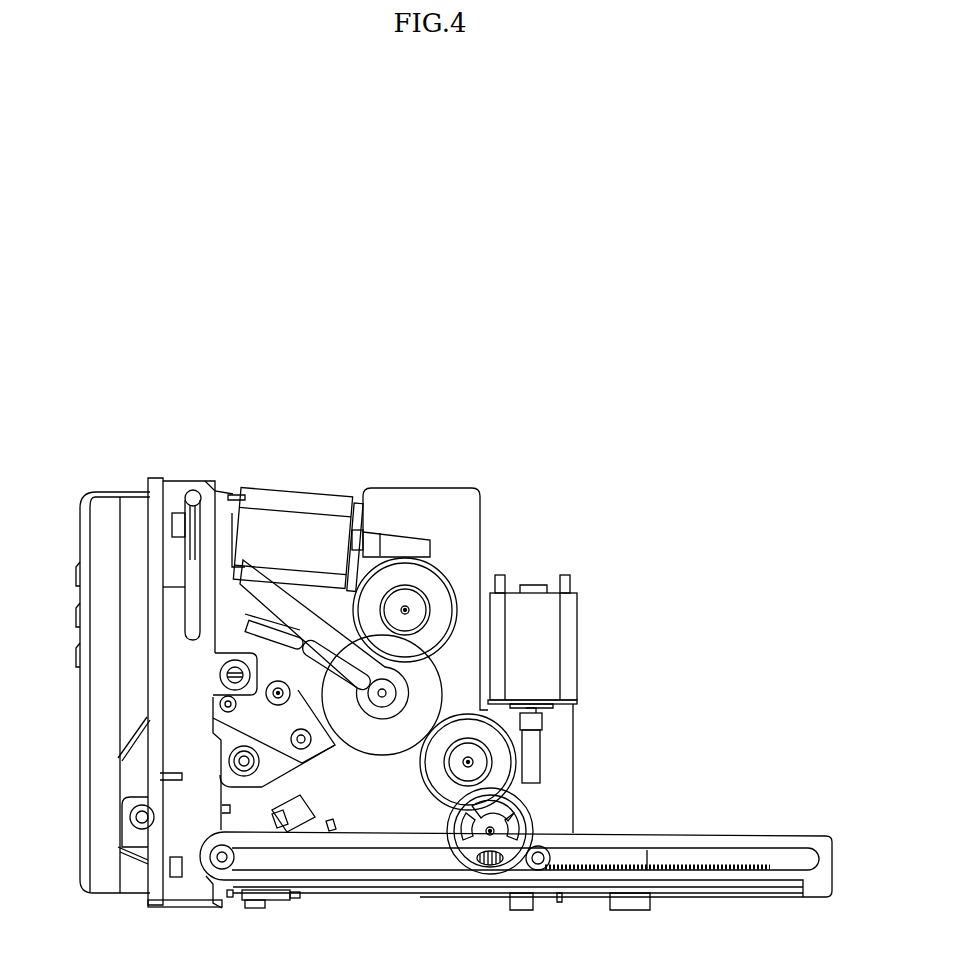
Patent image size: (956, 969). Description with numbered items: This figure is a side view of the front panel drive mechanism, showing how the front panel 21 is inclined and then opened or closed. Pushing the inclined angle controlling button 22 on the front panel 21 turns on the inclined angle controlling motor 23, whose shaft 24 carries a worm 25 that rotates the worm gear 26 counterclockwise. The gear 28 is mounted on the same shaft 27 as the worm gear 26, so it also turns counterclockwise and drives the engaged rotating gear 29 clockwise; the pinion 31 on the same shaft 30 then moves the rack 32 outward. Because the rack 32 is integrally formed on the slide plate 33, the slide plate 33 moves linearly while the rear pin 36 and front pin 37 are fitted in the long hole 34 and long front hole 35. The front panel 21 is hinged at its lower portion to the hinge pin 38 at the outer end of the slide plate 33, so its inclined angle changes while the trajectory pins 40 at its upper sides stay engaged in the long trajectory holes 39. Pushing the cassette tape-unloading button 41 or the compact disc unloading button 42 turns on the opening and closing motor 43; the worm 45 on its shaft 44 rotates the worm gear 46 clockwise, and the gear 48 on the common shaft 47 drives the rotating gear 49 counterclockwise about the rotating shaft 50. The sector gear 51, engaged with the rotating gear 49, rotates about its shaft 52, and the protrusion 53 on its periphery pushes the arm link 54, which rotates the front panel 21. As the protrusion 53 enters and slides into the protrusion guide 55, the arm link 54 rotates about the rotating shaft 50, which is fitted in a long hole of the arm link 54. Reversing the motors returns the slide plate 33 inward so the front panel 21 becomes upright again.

The front panel 21 is at (119, 470).
The inclined angle controlling button 22 is at (75, 572).
The inclined angle controlling motor 23 is at (553, 683).
The shaft 24 is at (538, 710).
The worm 25 is at (537, 766).
The worm gear 26 is at (512, 790).
The shaft 27 is at (455, 783).
The gear 28 is at (467, 762).
The rotating gear 29 is at (532, 820).
The shaft 30 is at (490, 835).
The pinion 31 is at (497, 866).
The rack 32 is at (676, 870).
The slide plate 33 is at (828, 820).
The long hole 34 is at (695, 858).
The long front hole 35 is at (282, 860).
The rear pin 36 is at (540, 870).
The front pin 37 is at (218, 862).
The hinge pin 38 is at (128, 820).
The long trajectory hole 39 is at (202, 512).
The trajectory pin 40 is at (192, 490).
The cassette tape-unloading button 41 is at (75, 612).
The compact disc unloading button 42 is at (75, 652).
The opening and closing motor 43 is at (297, 500).
The shaft 44 is at (360, 532).
The worm 45 is at (400, 543).
The worm gear 46 is at (440, 565).
The shaft 47 is at (427, 587).
The gear 48 is at (406, 610).
The rotating gear 49 is at (442, 690).
The rotating shaft 50 is at (381, 695).
The sector gear 51 is at (250, 723).
The shaft 52 is at (229, 761).
The protrusion 53 is at (266, 693).
The arm link 54 is at (313, 630).
The protrusion guide 55 is at (255, 612).